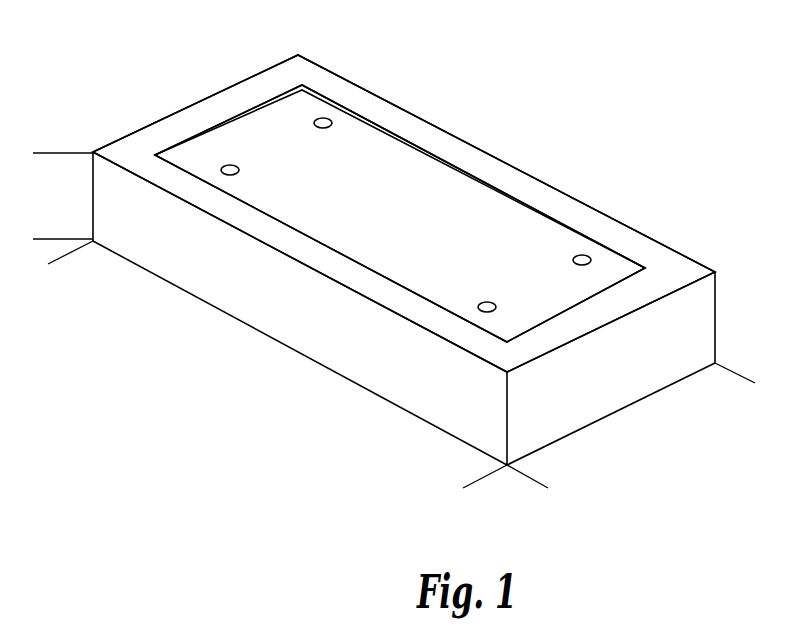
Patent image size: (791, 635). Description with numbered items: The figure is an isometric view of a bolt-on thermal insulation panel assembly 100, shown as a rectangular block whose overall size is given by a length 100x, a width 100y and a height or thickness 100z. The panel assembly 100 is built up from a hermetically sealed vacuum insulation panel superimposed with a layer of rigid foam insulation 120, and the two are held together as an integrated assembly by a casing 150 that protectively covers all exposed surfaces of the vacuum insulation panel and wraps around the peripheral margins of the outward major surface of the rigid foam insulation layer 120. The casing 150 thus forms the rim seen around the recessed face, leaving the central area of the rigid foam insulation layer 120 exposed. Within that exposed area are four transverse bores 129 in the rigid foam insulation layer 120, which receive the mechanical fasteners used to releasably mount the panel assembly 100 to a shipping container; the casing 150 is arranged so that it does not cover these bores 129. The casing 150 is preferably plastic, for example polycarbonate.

The thermal insulation panel assembly 100 is at (515, 80).
The layer of rigid foam insulation 120 is at (447, 180).
The transverse bores 129 is at (239, 171).
The casing 150 is at (653, 248).
The length 100x is at (464, 486).
The width 100y is at (740, 378).
The height or thickness 100z is at (46, 153).